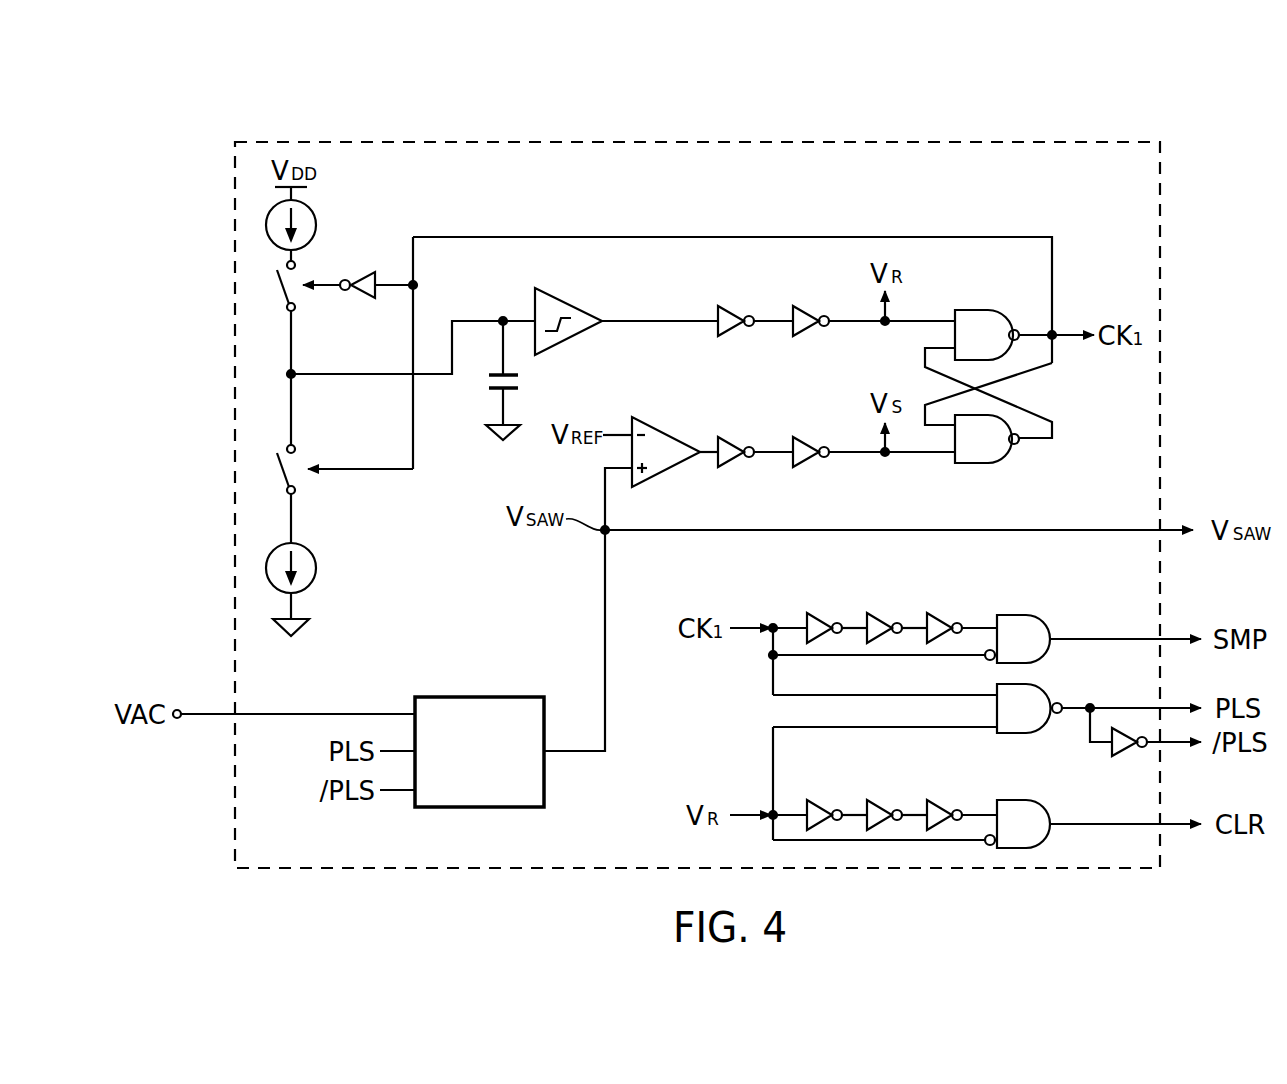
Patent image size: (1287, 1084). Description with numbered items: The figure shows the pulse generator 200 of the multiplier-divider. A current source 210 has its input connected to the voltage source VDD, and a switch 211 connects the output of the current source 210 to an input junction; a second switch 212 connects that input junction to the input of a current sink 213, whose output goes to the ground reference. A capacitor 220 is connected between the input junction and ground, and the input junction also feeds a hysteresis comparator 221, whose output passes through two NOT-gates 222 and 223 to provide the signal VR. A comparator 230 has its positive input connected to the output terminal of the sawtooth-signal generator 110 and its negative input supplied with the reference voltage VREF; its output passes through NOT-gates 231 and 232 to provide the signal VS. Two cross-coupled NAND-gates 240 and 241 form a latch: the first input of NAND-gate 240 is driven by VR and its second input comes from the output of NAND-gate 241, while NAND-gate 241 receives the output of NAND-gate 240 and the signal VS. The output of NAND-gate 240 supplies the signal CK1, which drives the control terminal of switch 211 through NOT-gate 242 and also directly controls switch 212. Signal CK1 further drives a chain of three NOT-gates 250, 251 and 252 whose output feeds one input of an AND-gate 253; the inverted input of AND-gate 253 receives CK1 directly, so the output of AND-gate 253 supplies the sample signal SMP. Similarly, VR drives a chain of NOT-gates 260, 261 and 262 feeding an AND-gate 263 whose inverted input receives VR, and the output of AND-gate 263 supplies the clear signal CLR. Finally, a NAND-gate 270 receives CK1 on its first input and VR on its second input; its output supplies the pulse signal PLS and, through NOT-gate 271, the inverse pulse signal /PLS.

The pulse generator 200 is at (1112, 140).
The sawtooth-signal generator 110 is at (485, 696).
The current source 210 is at (265, 227).
The switch 211 is at (275, 297).
The switch 212 is at (275, 472).
The current sink 213 is at (265, 569).
The capacitor 220 is at (488, 397).
The hysteresis comparator 221 is at (575, 298).
The NOT-gate 222 is at (730, 304).
The NOT-gate 223 is at (804, 304).
The comparator 230 is at (672, 417).
The NOT-gate 231 is at (730, 436).
The NOT-gate 232 is at (804, 436).
The NAND-gate 240 is at (974, 308).
The NAND-gate 241 is at (980, 466).
The NOT-gate 242 is at (357, 268).
The NOT-gate 250 is at (820, 611).
The NOT-gate 251 is at (883, 611).
The NOT-gate 252 is at (942, 611).
The AND-gate 253 is at (1010, 613).
The NOT-gate 260 is at (820, 798).
The NOT-gate 261 is at (883, 798).
The NOT-gate 262 is at (942, 798).
The AND-gate 263 is at (1025, 851).
The NAND-gate 270 is at (1028, 736).
The NOT-gate 271 is at (1127, 758).